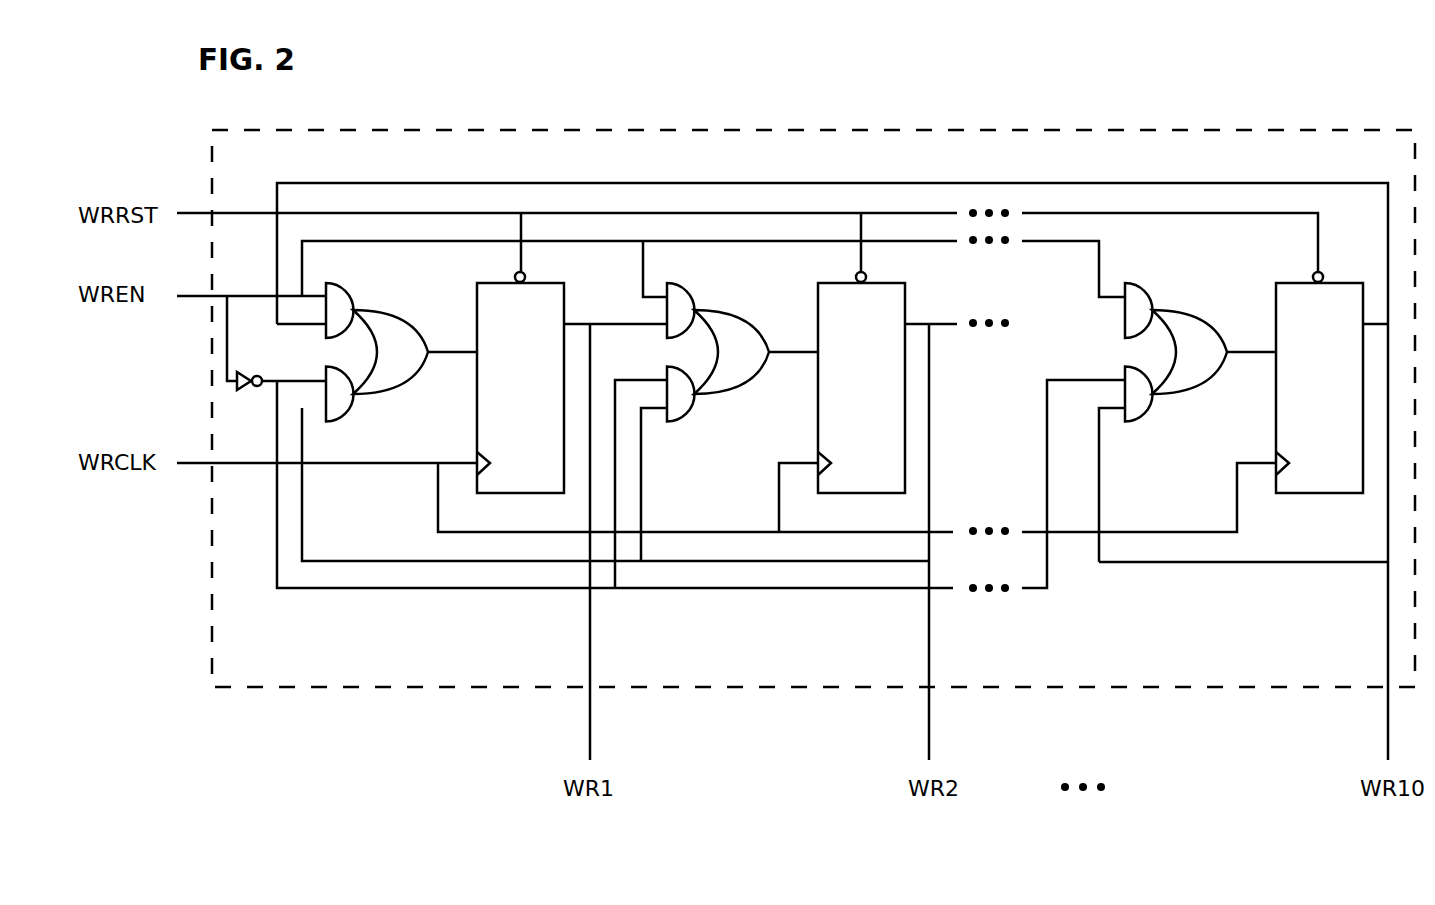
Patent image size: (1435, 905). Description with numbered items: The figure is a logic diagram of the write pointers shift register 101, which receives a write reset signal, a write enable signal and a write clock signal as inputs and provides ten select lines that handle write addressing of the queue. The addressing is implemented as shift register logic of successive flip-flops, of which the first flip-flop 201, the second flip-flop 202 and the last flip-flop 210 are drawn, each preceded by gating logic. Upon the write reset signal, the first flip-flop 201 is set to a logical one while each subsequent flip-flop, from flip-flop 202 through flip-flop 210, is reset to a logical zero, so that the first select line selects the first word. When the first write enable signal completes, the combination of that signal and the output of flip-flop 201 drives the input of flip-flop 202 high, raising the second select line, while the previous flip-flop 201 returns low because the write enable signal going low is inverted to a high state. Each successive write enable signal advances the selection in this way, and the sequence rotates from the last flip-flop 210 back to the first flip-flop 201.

The write pointers shift register 101 is at (813, 408).
The first flip-flop 201 is at (520, 389).
The second flip-flop 202 is at (861, 389).
The last flip-flop 210 is at (1319, 389).